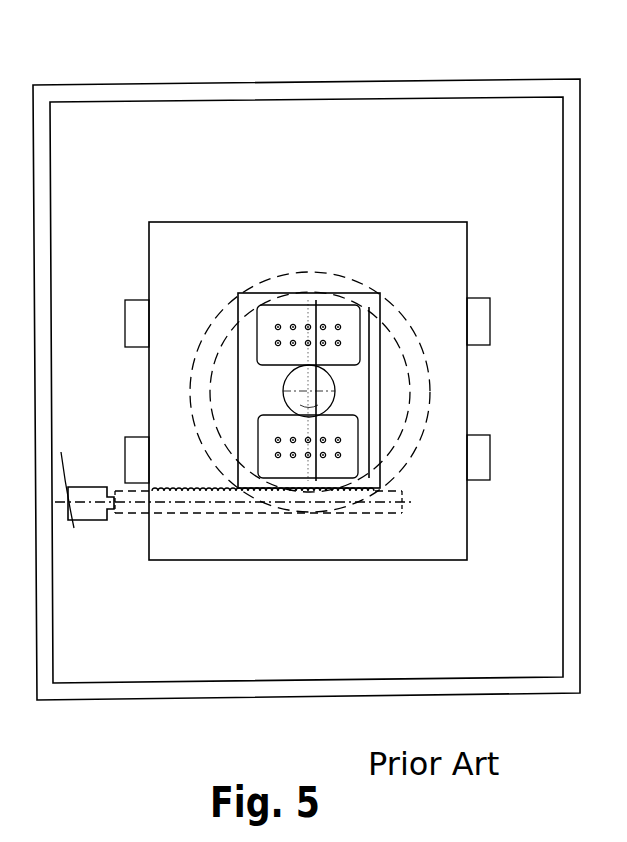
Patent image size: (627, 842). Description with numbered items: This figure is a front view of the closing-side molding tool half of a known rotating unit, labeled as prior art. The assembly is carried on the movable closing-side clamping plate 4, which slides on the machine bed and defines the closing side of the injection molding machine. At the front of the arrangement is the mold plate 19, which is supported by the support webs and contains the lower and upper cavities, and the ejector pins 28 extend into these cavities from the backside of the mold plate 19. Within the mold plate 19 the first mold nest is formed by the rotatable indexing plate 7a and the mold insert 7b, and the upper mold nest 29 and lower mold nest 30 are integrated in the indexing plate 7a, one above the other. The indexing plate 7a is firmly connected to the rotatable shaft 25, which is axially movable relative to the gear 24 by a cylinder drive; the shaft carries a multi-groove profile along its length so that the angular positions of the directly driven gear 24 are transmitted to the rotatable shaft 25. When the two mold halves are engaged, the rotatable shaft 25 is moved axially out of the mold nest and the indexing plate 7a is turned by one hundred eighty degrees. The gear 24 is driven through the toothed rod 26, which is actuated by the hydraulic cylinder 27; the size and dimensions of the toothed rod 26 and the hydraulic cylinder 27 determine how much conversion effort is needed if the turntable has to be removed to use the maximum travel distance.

The closing-side clamping plate 4 is at (500, 672).
The rotatable indexing plate 7a is at (350, 305).
The mold insert 7b is at (403, 407).
The mold plate 19 is at (405, 381).
The gear 24 is at (445, 430).
The rotatable shaft 25 is at (312, 392).
The toothed rod 26 is at (173, 508).
The hydraulic cylinder 27 is at (118, 515).
The ejector pins 28 is at (375, 467).
The upper mold nest 29 is at (297, 317).
The lower mold nest 30 is at (302, 465).